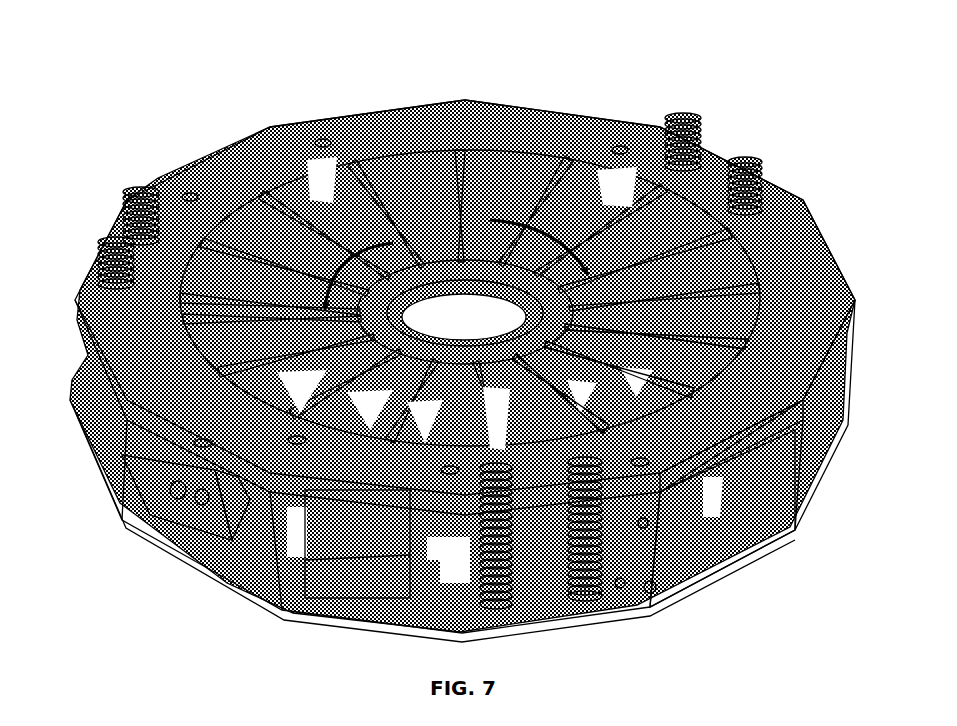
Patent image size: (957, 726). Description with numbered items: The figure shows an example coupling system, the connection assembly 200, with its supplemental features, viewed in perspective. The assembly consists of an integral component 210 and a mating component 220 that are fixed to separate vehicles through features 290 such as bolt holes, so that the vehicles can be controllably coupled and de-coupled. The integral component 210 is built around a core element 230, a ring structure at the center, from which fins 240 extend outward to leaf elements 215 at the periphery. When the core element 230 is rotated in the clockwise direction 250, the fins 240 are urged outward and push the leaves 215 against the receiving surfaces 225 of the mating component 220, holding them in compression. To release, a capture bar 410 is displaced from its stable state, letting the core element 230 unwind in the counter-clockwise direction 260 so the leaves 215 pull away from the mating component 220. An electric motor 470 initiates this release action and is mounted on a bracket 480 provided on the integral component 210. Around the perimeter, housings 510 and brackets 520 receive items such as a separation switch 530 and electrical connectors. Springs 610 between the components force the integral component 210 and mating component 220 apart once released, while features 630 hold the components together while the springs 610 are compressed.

The connection assembly 200 is at (157, 170).
The integral component 210 is at (550, 600).
The leaf elements 215 is at (737, 497).
The mating component 220 is at (265, 152).
The receiving surfaces 225 is at (767, 387).
The core element 230 is at (453, 263).
The fins 240 is at (255, 318).
The clockwise direction 250 is at (550, 230).
The counter-clockwise direction 260 is at (353, 265).
The features 290 is at (737, 220).
The capture bar 410 is at (517, 383).
The electric motor 470 is at (583, 420).
The bracket 480 is at (557, 387).
The housings 510 is at (347, 577).
The brackets 520 is at (173, 517).
The separation switch 530 is at (227, 507).
The springs 610 is at (593, 557).
The features 630 is at (643, 523).